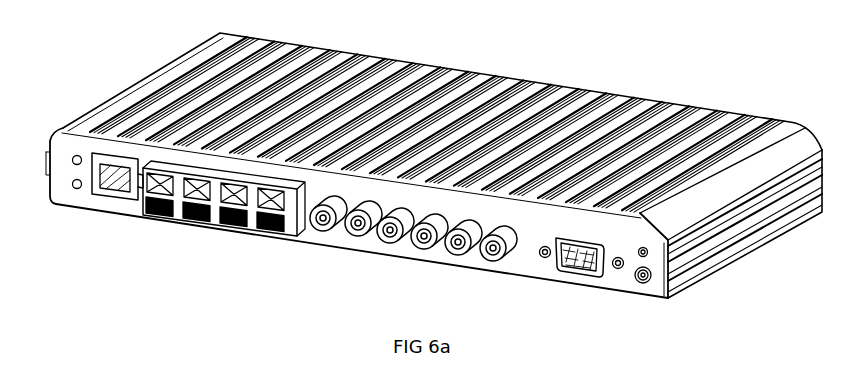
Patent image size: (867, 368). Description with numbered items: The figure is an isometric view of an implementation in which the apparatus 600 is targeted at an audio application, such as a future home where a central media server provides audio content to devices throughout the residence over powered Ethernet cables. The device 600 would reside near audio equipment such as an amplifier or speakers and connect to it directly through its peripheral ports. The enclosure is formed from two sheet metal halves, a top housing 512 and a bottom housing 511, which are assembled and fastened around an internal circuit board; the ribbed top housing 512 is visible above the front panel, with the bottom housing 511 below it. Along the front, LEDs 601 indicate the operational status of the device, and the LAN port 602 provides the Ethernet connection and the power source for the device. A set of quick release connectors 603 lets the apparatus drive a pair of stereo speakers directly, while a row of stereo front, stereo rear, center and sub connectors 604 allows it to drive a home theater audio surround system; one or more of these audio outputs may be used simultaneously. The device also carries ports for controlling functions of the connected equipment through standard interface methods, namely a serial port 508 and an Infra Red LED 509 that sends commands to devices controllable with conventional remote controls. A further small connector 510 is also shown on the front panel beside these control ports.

The apparatus 600 is at (120, 52).
The LEDs 601 is at (74, 190).
The LAN port 602 is at (113, 193).
The quick release connectors 603 is at (158, 212).
The stereo front, stereo rear, center and sub connectors 604 is at (485, 257).
The RS-232 serial port 508 is at (560, 268).
The Infra Red (IR) LED 509 is at (640, 258).
The power jack 510 is at (638, 279).
The bottom housing 511 is at (653, 297).
The top housing 512 is at (713, 268).